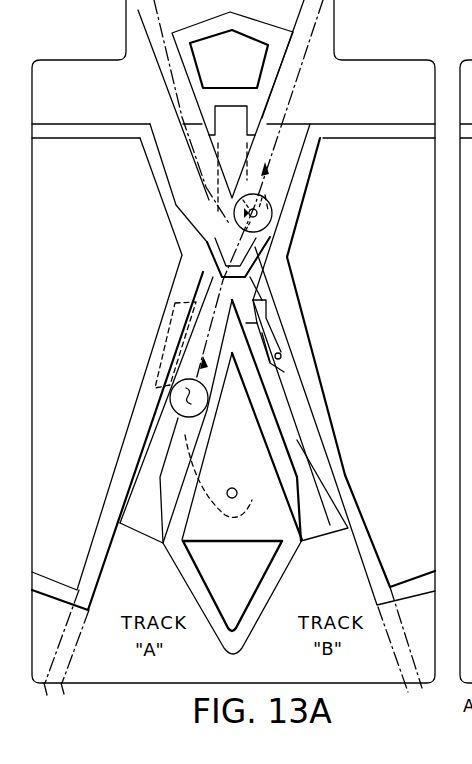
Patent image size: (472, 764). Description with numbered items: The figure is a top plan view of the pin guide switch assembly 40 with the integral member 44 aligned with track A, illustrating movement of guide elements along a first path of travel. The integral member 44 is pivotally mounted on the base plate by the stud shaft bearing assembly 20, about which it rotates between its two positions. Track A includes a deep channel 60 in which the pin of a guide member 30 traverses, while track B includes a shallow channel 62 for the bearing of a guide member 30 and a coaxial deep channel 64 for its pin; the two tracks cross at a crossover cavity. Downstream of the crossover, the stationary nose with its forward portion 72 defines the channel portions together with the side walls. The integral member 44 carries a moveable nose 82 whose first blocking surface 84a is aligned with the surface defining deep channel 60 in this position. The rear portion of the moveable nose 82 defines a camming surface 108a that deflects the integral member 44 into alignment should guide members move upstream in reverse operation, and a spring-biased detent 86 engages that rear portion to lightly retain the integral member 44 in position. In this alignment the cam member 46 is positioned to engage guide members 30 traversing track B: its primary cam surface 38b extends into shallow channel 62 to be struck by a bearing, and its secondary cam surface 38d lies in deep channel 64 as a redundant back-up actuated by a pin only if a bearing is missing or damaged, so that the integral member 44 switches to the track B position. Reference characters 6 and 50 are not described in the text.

The switch assembly 40 is at (389, 57).
The forward portion 72 is at (218, 153).
The spring-biased detent 86 is at (207, 209).
The camming surface 108a is at (210, 242).
The moveable nose member 82 is at (210, 258).
The integral member 44 is at (157, 333).
The guide block 6 is at (283, 138).
The first blocking surface 84a is at (240, 259).
The guide member 30 is at (275, 214).
The stud shaft bearing assembly 20 is at (236, 489).
The deep channel 60 is at (150, 496).
The switch rail 50 is at (157, 444).
The deep channel 64 is at (304, 487).
The shallow channel 62 is at (301, 413).
The cam member 46 is at (278, 325).
The primary cam surface 38b is at (281, 355).
The secondary cam surface 38d is at (272, 370).